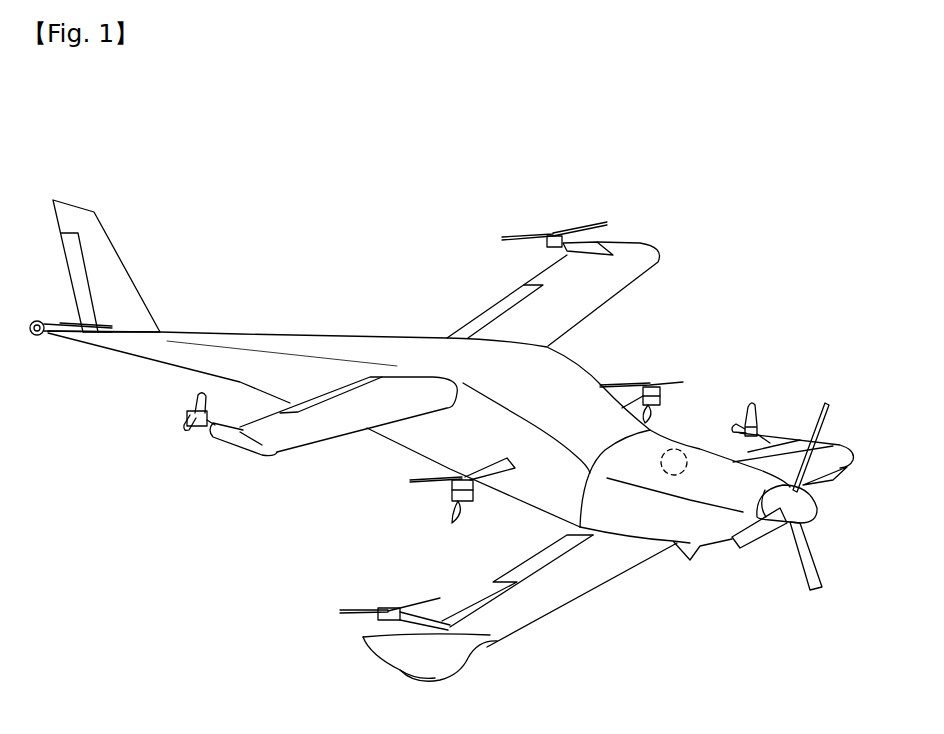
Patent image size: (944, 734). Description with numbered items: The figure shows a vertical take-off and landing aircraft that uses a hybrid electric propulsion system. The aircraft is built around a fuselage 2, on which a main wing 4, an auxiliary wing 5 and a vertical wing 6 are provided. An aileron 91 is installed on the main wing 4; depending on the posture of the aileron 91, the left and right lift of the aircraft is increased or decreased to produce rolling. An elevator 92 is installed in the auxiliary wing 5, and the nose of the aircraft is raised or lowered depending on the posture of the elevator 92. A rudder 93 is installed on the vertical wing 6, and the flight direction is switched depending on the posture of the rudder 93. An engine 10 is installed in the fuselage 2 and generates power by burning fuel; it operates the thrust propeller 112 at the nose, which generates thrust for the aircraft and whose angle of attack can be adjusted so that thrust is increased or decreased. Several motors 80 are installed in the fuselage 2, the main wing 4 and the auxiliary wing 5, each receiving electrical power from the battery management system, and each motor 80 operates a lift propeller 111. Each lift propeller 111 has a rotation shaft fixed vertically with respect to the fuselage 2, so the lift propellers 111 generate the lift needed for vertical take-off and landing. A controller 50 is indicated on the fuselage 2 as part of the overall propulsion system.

The fuselage 2 is at (547, 412).
The main wing 4 is at (310, 433).
The auxiliary wing 5 is at (570, 585).
The vertical wing 6 is at (113, 267).
The engine 10 is at (805, 502).
The controller 50 is at (683, 447).
The motor 80 is at (187, 413).
The aileron 91 is at (320, 393).
The elevator 92 is at (477, 595).
The rudder 93 is at (80, 282).
The lift propeller 111 is at (527, 235).
The thrust propeller 112 is at (800, 557).